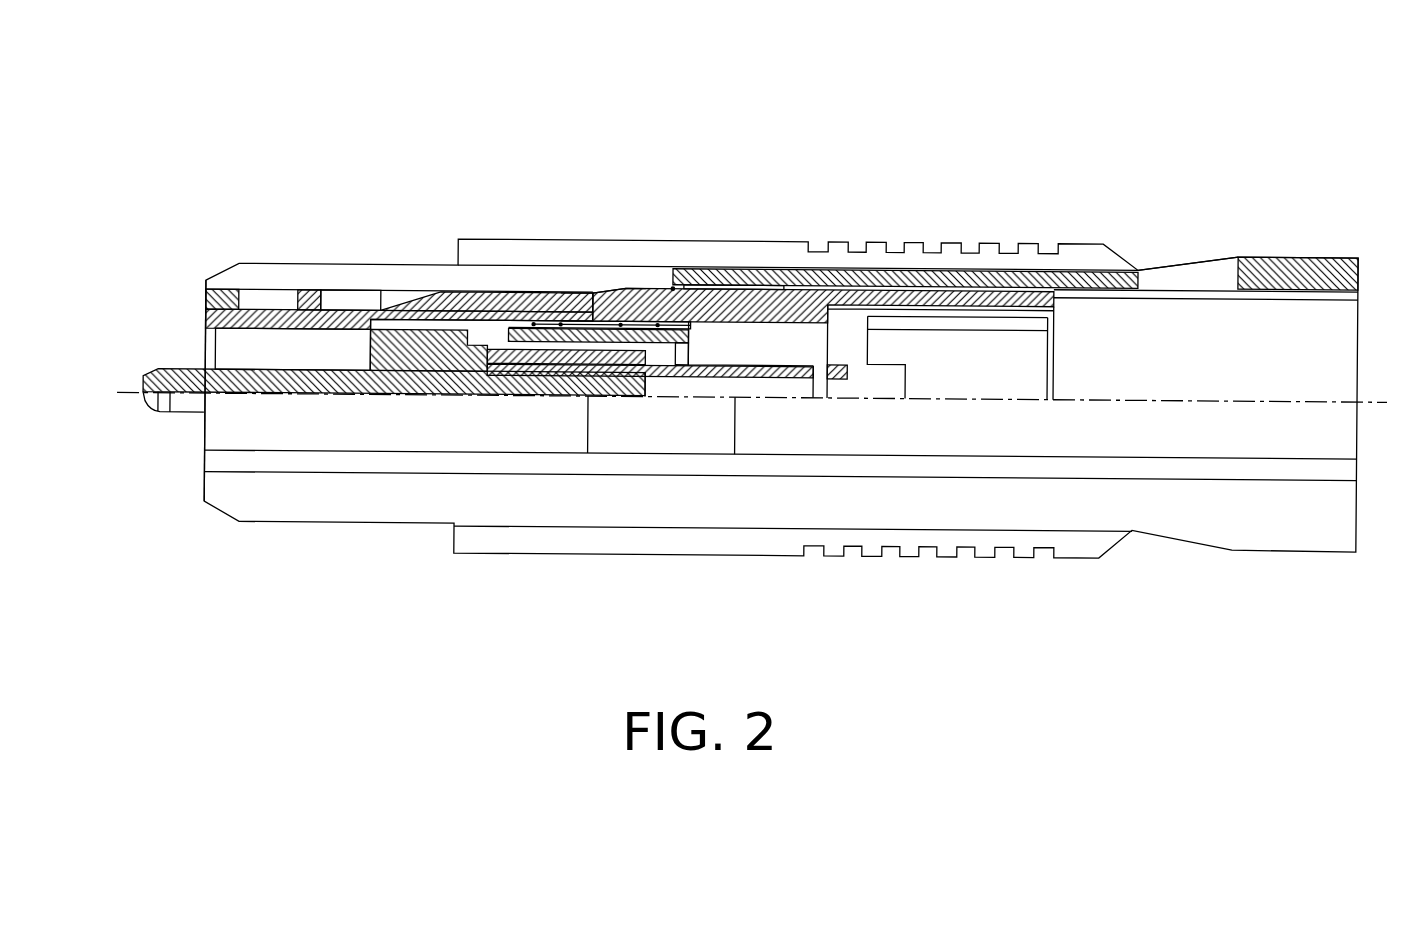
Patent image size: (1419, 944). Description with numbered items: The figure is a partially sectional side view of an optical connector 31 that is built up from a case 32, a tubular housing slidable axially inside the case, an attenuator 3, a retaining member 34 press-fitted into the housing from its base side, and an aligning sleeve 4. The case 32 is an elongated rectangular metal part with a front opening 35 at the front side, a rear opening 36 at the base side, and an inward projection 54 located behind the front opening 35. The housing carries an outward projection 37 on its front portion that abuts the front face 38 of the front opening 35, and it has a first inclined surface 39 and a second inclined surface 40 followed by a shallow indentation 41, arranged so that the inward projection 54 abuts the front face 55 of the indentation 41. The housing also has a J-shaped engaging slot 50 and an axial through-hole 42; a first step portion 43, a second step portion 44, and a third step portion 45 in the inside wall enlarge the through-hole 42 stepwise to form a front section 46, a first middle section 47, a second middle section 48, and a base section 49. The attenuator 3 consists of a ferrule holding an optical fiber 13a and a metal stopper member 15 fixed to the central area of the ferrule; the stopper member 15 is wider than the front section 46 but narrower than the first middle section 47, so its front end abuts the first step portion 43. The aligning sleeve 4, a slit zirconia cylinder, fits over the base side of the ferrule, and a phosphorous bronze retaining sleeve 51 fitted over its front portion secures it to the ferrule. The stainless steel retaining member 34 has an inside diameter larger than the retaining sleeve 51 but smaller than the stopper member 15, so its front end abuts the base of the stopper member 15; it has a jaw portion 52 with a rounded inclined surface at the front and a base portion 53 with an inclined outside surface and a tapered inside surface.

The optical connector 31 is at (753, 109).
The case 32 is at (1084, 240).
The attenuator 3 is at (140, 377).
The optical fiber 13a is at (168, 414).
The aligning sleeve 4 is at (793, 350).
The stopper member 15 is at (460, 293).
The retaining member 34 is at (633, 288).
The front opening 35 is at (349, 300).
The rear opening 36 is at (1197, 265).
The outward projection 37 is at (300, 308).
The front face 38 is at (243, 296).
The first inclined surface 39 is at (425, 293).
The second inclined surface 40 is at (618, 321).
The shallow indentation 41 is at (770, 290).
The through-hole 42 is at (1320, 343).
The first step portion 43 is at (390, 325).
The second step portion 44 is at (540, 321).
The third step portion 45 is at (852, 300).
The front section 46 is at (295, 352).
The first middle section 47 is at (505, 330).
The second middle section 48 is at (767, 338).
The base section 49 is at (968, 357).
The J-shaped engaging slot 50 is at (970, 320).
The retaining sleeve 51 is at (672, 286).
The jaw portion 52 is at (580, 295).
The base portion 53 is at (660, 345).
The inward projection 54 is at (710, 323).
The front face 55 is at (686, 275).